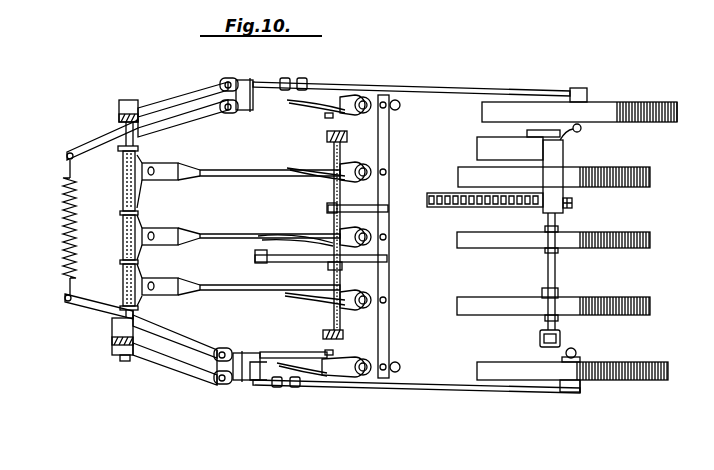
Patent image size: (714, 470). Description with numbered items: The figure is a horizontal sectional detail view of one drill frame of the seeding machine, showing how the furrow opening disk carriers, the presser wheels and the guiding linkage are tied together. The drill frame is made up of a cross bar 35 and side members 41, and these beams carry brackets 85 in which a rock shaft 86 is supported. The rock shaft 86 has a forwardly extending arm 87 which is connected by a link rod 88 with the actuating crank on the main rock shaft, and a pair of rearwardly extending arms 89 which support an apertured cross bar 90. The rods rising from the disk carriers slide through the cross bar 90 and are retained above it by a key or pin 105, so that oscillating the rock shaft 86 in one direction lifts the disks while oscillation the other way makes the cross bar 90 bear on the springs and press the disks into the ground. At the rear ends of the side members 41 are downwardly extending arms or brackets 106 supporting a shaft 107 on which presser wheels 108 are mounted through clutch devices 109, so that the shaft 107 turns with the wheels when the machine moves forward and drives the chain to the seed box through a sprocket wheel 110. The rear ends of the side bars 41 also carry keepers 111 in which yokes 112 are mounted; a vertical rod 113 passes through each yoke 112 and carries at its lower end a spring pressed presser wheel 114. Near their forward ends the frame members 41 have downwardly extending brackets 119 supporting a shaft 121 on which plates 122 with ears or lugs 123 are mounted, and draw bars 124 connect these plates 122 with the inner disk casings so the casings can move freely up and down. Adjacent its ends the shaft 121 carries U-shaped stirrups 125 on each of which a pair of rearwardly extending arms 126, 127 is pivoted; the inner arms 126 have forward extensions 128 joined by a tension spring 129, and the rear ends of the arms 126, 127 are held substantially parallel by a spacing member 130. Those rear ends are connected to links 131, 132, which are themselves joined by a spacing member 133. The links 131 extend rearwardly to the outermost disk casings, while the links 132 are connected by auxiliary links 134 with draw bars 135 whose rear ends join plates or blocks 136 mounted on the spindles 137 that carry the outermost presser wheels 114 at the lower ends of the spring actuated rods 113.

The cross bar 35 is at (548, 202).
The side members 41 is at (482, 142).
The brackets 85 is at (323, 135).
The rock shaft 86 is at (332, 197).
The forwardly extending arm 87 is at (277, 262).
The link rods 88 is at (258, 248).
The rearwardly extending arms 89 is at (358, 207).
The cross bar 90 is at (384, 150).
The key or pin 105 is at (387, 172).
The arms or brackets 106 is at (540, 337).
The shaft 107 is at (557, 270).
The presser wheels 108 is at (637, 232).
The clutch devices 109 is at (542, 290).
The sprocket wheel 110 is at (572, 206).
The keepers 111 is at (530, 132).
The yoke 112 is at (581, 132).
The vertical rod 113 is at (578, 351).
The presser wheel 114 is at (632, 108).
The brackets 119 is at (140, 115).
The shaft 121 is at (123, 233).
The plates 122 is at (152, 187).
The ears or lugs 123 is at (125, 153).
The draw bars 124 is at (226, 174).
The U-shaped supporting members or stirrups 125 is at (122, 103).
The inner arms 126 is at (198, 118).
The arms 127 is at (178, 98).
The forward extensions 128 is at (97, 147).
The tension spring 129 is at (62, 235).
The spacing member 130 is at (217, 365).
The links 131 is at (268, 358).
The links 132 is at (263, 385).
The spacing member 133 is at (250, 80).
The auxiliary links 134 is at (303, 74).
The draw bars 135 is at (432, 92).
The plates or blocks 136 is at (583, 385).
The spindles 137 is at (573, 393).